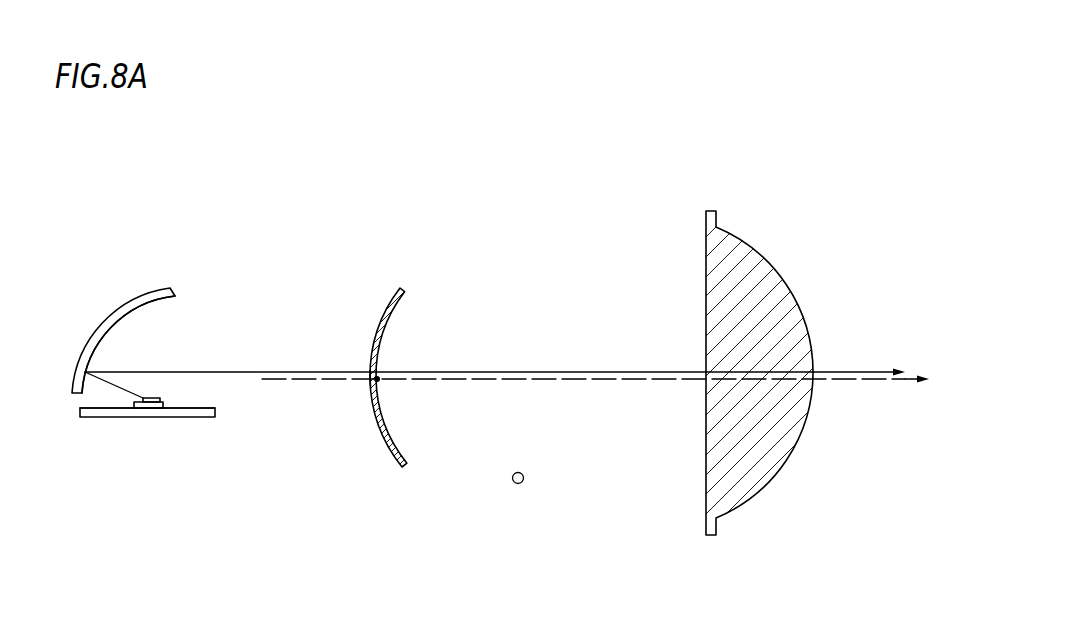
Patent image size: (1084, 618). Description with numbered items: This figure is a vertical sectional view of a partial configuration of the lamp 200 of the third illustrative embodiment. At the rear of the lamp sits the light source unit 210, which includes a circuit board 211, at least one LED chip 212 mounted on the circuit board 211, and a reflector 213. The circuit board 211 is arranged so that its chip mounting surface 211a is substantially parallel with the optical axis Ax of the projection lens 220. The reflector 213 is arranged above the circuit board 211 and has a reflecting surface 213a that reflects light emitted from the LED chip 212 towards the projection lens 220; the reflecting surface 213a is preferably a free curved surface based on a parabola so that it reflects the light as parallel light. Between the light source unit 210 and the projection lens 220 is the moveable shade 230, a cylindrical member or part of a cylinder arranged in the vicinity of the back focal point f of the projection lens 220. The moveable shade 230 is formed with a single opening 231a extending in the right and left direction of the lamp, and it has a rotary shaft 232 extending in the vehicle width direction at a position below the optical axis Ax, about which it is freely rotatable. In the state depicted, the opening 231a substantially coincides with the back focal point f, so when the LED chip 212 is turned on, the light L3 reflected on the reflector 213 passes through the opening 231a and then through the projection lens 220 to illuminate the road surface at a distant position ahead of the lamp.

The vehicle lamp unit 200 is at (468, 588).
The light source unit 210 is at (120, 276).
The circuit board 211 is at (147, 423).
The chip mounting surface 211a is at (198, 408).
The LED chip 212 is at (167, 400).
The reflector 213 is at (158, 292).
The reflecting surface 213a is at (140, 313).
The projection lens 220 is at (763, 217).
The moveable shade 230 is at (402, 292).
The opening 231a is at (376, 379).
The rotary shaft 232 is at (518, 484).
The back focal point f is at (379, 380).
The light L3 is at (613, 372).
The optical axis Ax is at (604, 378).